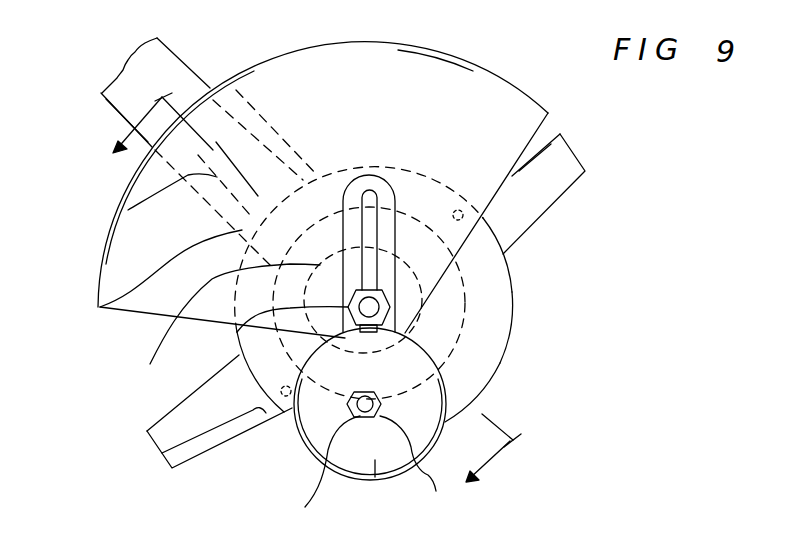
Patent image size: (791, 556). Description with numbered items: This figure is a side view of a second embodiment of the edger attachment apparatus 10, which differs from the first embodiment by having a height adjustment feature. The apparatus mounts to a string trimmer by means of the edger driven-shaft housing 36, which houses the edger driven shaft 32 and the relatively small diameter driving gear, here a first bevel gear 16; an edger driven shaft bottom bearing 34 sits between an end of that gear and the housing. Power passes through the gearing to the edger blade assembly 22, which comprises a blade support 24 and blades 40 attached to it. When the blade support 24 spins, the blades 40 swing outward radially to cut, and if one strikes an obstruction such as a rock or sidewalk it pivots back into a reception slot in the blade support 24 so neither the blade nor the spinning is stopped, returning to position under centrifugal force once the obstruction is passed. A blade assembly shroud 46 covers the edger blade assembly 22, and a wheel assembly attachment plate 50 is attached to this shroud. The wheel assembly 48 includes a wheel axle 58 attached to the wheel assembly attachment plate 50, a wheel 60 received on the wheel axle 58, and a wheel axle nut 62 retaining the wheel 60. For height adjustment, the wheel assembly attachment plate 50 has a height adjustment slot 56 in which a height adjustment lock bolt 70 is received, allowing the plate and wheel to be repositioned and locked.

The edger attachment apparatus 10 is at (160, 63).
The first bevel gear 16 is at (150, 364).
The edger blade assembly 22 is at (520, 319).
The blade support 24 is at (485, 283).
The edger driven shaft 32 is at (128, 210).
The edger driven shaft bottom bearing 34 is at (100, 307).
The edger driven-shaft housing 36 is at (160, 37).
The blades 40 is at (548, 194).
The blade assembly shroud 46 is at (463, 110).
The wheel assembly 48 is at (291, 456).
The wheel assembly attachment plate 50 is at (385, 198).
The height adjustment slot 56 is at (364, 216).
The wheel axle 58 is at (421, 472).
The wheel 60 is at (360, 478).
The wheel axle nut 62 is at (320, 482).
The height adjustment lock bolt 70 is at (237, 335).